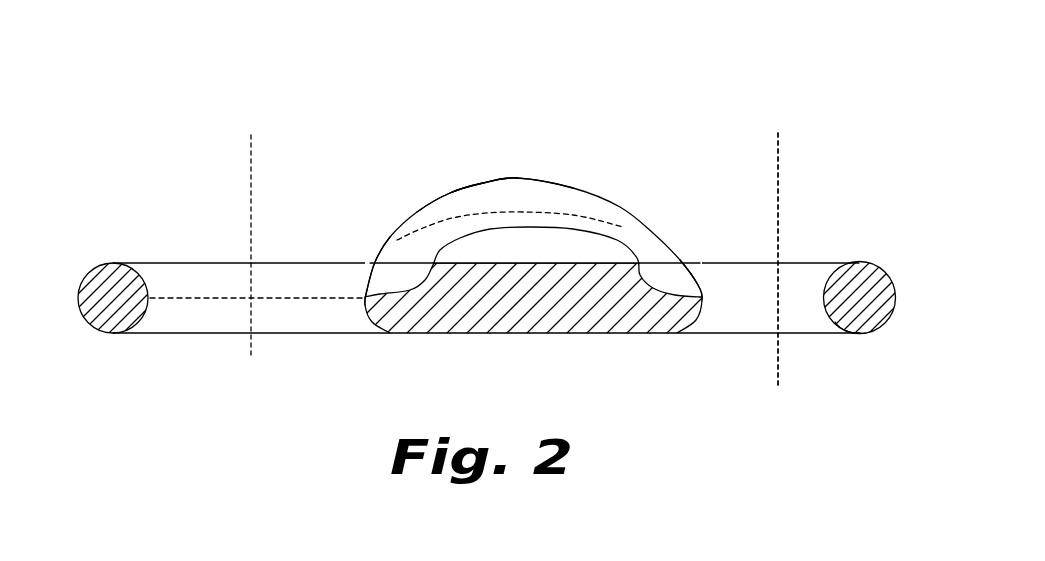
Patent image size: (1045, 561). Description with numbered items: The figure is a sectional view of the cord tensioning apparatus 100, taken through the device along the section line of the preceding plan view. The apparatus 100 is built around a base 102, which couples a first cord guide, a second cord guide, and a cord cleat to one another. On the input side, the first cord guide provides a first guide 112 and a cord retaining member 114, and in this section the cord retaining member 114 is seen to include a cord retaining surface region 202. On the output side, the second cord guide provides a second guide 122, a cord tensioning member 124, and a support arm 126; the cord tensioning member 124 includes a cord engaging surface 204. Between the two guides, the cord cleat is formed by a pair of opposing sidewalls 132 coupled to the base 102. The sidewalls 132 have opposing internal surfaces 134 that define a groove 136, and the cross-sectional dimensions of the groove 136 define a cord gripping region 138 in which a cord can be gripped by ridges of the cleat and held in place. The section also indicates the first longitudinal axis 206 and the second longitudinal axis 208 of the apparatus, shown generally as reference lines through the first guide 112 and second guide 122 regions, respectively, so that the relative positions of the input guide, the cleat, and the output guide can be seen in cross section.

The cord tensioning apparatus 100 is at (593, 93).
The base 102 is at (528, 300).
The first guide 112 is at (387, 280).
The cord retaining member 114 is at (113, 263).
The second guide 122 is at (667, 275).
The cord tensioning member 124 is at (875, 277).
The support arm 126 is at (780, 275).
The opposing sidewalls 132 is at (465, 183).
The opposing internal surfaces 134 is at (473, 200).
The groove 136 is at (443, 213).
The cord gripping region 138 is at (633, 237).
The cord retaining surface region 202 is at (320, 327).
The cord engaging surface 204 is at (845, 335).
The first longitudinal axis 206 is at (255, 153).
The second longitudinal axis 208 is at (777, 362).